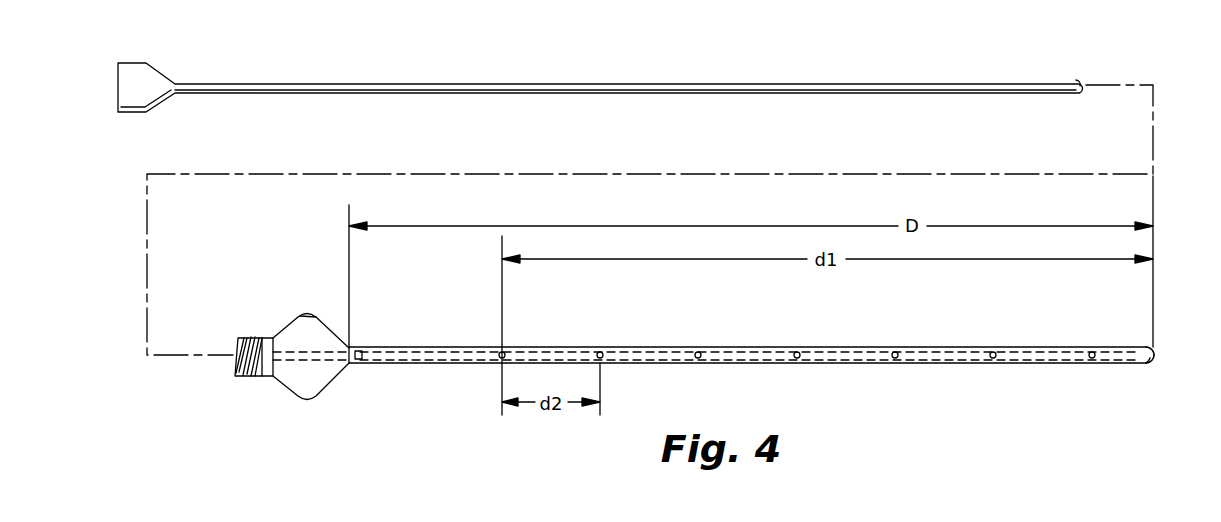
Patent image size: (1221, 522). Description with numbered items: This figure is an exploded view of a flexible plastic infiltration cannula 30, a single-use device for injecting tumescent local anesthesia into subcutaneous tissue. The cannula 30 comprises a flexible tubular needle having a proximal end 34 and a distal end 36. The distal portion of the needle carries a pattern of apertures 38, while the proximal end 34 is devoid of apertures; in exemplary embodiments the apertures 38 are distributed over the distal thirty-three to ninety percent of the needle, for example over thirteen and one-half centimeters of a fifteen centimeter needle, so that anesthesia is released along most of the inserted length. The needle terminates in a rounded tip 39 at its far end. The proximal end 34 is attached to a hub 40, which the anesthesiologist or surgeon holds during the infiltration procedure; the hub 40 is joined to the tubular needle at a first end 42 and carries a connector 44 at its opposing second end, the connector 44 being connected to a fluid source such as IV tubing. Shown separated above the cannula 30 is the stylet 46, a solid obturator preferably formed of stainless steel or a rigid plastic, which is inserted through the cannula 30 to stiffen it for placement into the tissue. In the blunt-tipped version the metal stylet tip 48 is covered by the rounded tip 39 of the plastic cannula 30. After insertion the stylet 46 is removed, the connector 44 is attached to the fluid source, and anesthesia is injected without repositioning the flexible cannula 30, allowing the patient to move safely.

The infiltration cannula 30 is at (556, 347).
The proximal end 34 is at (353, 345).
The distal end 36 is at (1121, 347).
The apertures 38 is at (501, 351).
The rounded tip 39 is at (1153, 363).
The hub 40 is at (308, 398).
The first end 42 is at (336, 330).
The connector 44 is at (268, 336).
The stylet 46 is at (462, 83).
The stylet tip 48 is at (1072, 79).